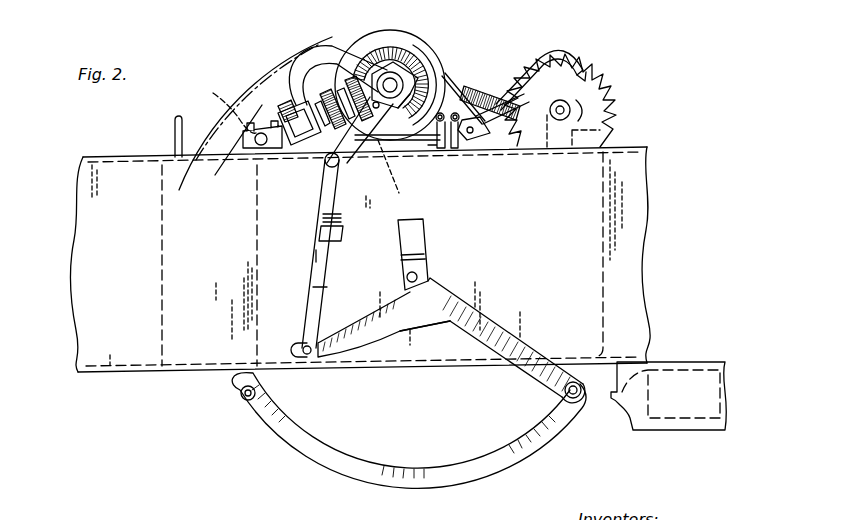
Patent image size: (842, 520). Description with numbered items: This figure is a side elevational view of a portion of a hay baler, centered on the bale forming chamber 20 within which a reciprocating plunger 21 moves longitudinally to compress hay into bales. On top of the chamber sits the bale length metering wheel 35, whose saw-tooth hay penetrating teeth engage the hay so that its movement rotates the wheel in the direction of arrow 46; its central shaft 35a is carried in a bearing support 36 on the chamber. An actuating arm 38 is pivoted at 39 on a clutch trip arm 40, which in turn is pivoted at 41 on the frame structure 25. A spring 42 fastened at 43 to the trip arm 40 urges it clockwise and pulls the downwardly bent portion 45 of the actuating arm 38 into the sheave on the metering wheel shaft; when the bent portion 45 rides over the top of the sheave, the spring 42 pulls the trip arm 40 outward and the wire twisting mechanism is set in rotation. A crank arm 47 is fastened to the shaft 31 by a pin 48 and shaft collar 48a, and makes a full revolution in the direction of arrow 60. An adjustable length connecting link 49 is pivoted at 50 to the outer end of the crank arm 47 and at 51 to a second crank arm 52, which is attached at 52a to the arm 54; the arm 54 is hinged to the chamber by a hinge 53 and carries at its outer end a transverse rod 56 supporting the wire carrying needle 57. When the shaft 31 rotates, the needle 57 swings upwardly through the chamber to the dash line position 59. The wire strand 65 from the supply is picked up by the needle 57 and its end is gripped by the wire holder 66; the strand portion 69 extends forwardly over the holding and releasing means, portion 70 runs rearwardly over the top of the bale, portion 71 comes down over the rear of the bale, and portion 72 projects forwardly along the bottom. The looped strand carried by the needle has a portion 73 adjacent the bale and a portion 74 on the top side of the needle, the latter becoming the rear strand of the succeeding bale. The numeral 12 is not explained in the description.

The machine frame 12 is at (236, 137).
The bale forming chamber 20 is at (180, 382).
The reciprocating plunger 21 is at (160, 170).
The frame structure 25 is at (171, 120).
The shaft 31 is at (389, 72).
The bale length metering wheel 35 is at (590, 105).
The central shaft 35a is at (562, 100).
The bearing support 36 is at (600, 130).
The actuating arm 38 is at (547, 53).
The pivot 39 is at (485, 132).
The clutch trip arm 40 is at (446, 104).
The pivot 41 is at (480, 90).
The spring 42 is at (498, 100).
The spring fastening point 43 is at (447, 74).
The downwardly bent portion 45 is at (585, 76).
The arrow 46 is at (585, 113).
The crank arm 47 is at (345, 165).
The pin 48 is at (382, 108).
The shaft collar 48a is at (398, 108).
The adjustable length connecting link 49 is at (316, 258).
The pivot 50 is at (323, 170).
The pivot 51 is at (303, 347).
The second crank arm 52 is at (358, 333).
The attachment point 52a is at (450, 306).
The hinge 53 is at (418, 275).
The arm 54 is at (538, 347).
The transverse rod 56 is at (580, 394).
The wire carrying needle 57 is at (338, 478).
The dash line position 59 is at (245, 97).
The arrow 60 is at (349, 200).
The wire strand 65 is at (236, 398).
The wire holder 66 is at (331, 62).
The strand portion 69 is at (287, 142).
The strand portion 70 is at (395, 175).
The strand portion 71 is at (606, 270).
The strand portion 72 is at (407, 365).
The strand portion 73 is at (228, 262).
The strand portion 74 is at (219, 109).